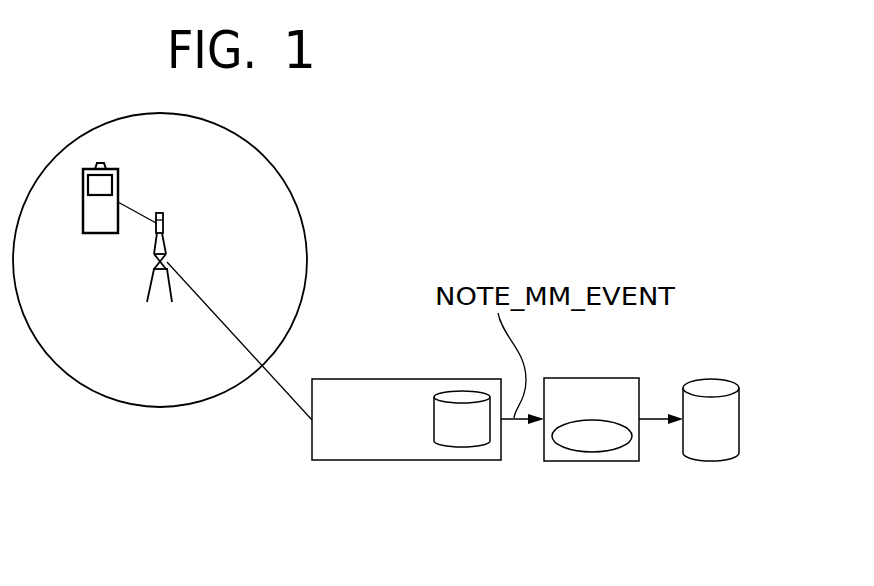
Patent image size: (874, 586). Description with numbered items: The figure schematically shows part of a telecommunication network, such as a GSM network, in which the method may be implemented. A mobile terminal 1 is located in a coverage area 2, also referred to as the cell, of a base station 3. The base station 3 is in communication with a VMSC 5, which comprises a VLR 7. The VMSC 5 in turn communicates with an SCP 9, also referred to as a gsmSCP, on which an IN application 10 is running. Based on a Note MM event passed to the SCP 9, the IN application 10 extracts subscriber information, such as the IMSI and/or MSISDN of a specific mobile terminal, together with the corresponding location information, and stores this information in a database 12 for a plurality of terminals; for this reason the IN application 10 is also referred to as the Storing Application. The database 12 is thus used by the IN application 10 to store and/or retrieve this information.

The mobile terminal 1 is at (93, 207).
The coverage area 2 is at (293, 198).
The base station 3 is at (155, 264).
The VMSC 5 is at (389, 377).
The VLR 7 is at (473, 412).
The SCP 9 is at (607, 378).
The IN application 10 is at (582, 452).
The database 12 is at (725, 437).